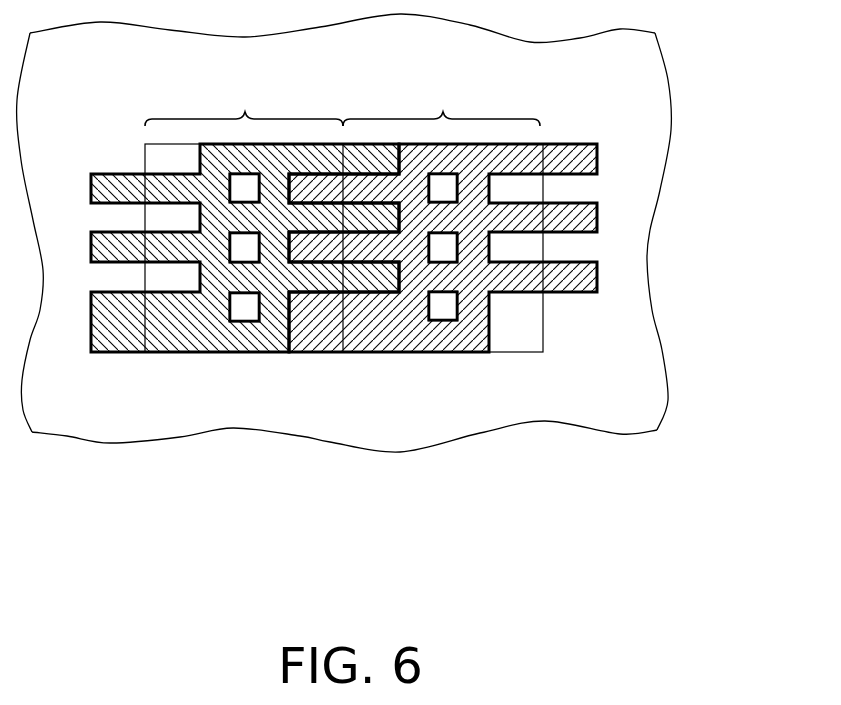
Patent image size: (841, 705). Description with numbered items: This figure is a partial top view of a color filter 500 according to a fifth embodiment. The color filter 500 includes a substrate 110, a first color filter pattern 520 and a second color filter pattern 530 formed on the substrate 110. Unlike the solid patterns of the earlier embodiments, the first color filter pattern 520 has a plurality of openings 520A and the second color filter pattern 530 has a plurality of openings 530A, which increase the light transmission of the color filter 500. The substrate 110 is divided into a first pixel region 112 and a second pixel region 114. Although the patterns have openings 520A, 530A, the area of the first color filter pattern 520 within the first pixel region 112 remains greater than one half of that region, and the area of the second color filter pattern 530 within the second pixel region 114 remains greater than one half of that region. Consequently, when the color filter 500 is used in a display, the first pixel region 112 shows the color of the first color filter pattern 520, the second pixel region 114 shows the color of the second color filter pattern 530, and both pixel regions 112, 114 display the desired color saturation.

The substrate 110 is at (630, 375).
The first pixel region 112 is at (244, 97).
The second pixel region 114 is at (441, 97).
The color filter 500 is at (430, 327).
The first color filter pattern 520 is at (191, 322).
The openings 520A is at (253, 318).
The second color filter pattern 530 is at (473, 277).
The openings 530A is at (456, 253).